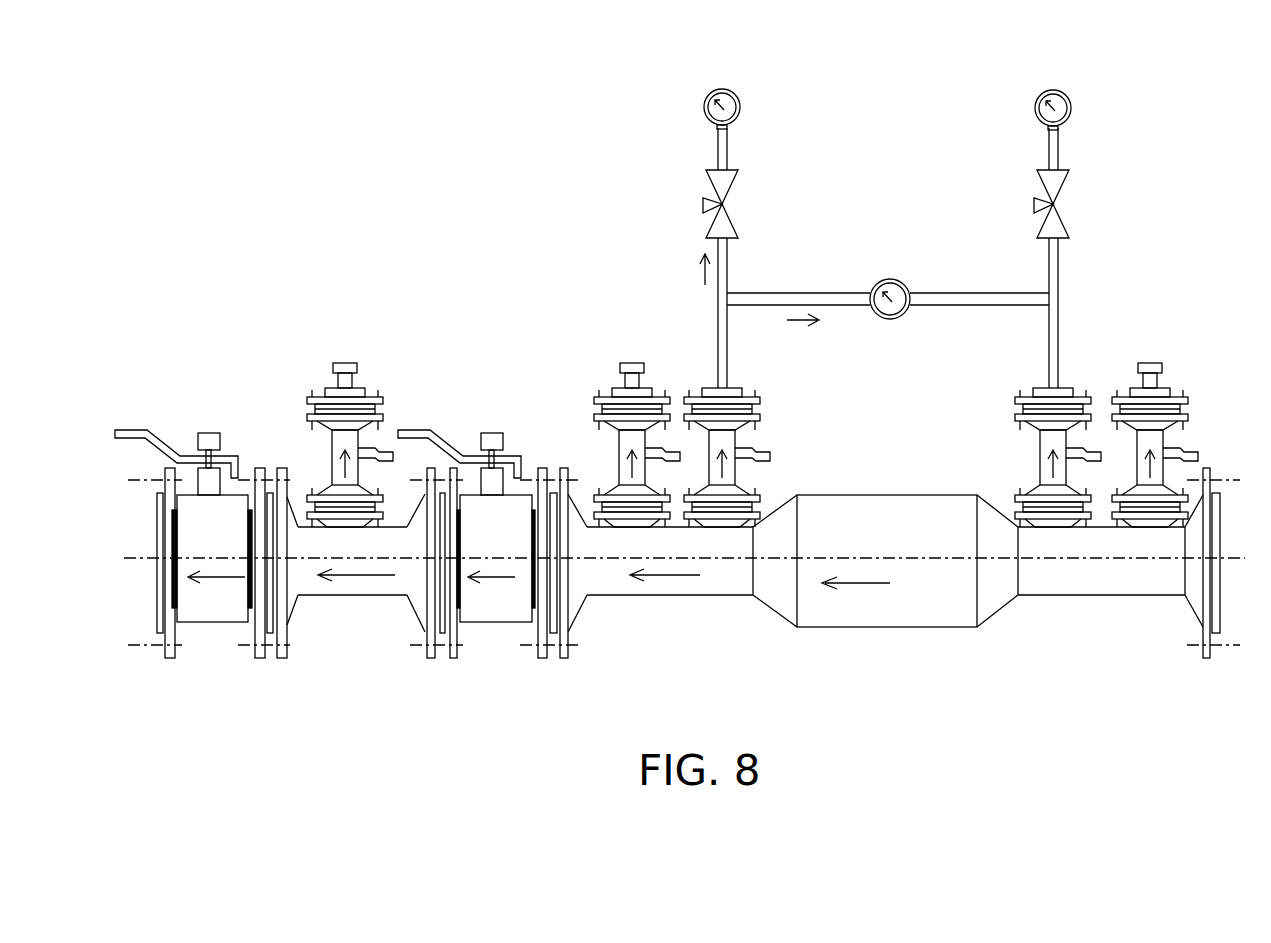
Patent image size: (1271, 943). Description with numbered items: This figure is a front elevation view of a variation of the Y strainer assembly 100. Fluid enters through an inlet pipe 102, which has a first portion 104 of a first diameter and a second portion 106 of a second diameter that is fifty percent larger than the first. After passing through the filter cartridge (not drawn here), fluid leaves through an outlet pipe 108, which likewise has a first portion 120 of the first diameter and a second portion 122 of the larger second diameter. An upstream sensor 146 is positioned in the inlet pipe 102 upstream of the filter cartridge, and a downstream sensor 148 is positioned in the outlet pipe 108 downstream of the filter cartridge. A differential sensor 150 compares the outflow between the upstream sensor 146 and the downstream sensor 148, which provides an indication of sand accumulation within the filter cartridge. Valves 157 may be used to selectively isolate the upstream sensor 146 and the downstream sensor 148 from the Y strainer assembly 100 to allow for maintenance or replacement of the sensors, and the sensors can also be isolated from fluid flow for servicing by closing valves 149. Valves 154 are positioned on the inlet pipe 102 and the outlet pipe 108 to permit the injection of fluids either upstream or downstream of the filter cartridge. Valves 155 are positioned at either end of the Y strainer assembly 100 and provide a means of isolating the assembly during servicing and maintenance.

The Y strainer assembly 100 is at (360, 92).
The inlet pipe 102 is at (1168, 597).
The first portion of the inlet pipe 104 is at (1100, 597).
The second portion of the inlet pipe 106 is at (971, 628).
The outlet pipe 108 is at (627, 595).
The first portion of the outlet pipe 120 is at (718, 595).
The second portion of the outlet pipe 122 is at (802, 627).
The upstream sensor 146 is at (1050, 88).
The downstream sensor 148 is at (717, 88).
The valves 149 is at (1040, 183).
The differential sensor 150 is at (907, 280).
The valves 154 is at (612, 450).
The valves 155 is at (483, 622).
The valves 157 is at (1040, 450).